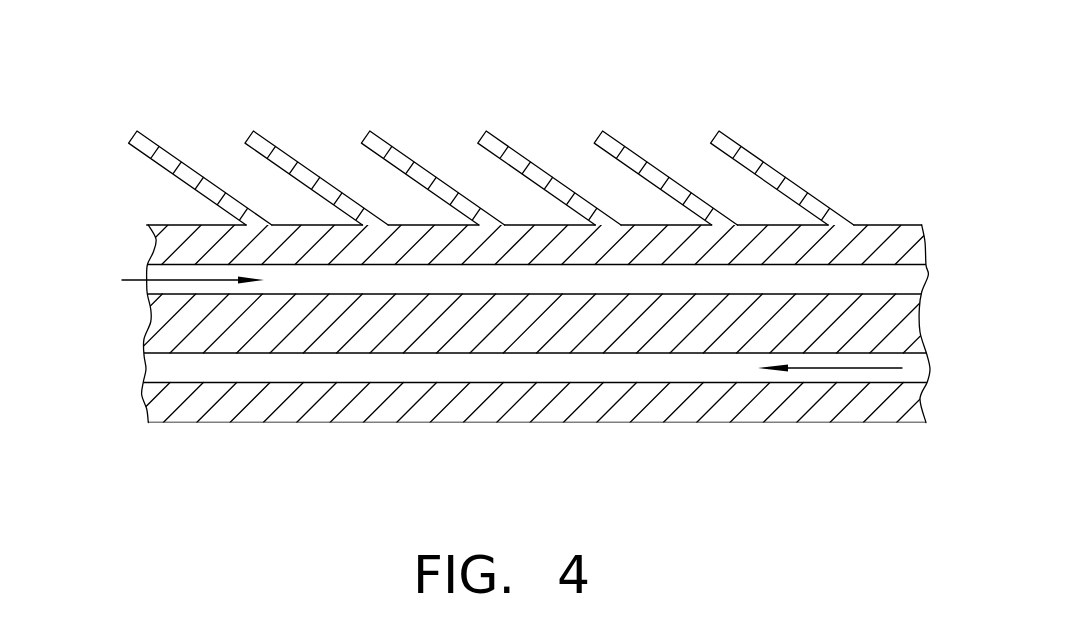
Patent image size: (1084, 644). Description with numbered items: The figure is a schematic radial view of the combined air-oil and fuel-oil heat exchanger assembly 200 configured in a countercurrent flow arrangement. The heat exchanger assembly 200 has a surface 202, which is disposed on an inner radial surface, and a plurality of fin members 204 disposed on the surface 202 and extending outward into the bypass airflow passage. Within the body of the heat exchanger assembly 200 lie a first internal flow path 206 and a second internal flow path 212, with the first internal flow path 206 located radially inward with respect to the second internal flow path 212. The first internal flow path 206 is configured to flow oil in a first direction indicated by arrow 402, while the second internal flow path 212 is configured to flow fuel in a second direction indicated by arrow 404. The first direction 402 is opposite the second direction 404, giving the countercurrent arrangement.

The heat exchanger assembly 200 is at (164, 84).
The surface 202 is at (173, 225).
The fin members 204 is at (377, 138).
The first internal flow path 206 is at (150, 265).
The second internal flow path 212 is at (152, 385).
The arrow 402 is at (180, 282).
The arrow 404 is at (838, 368).